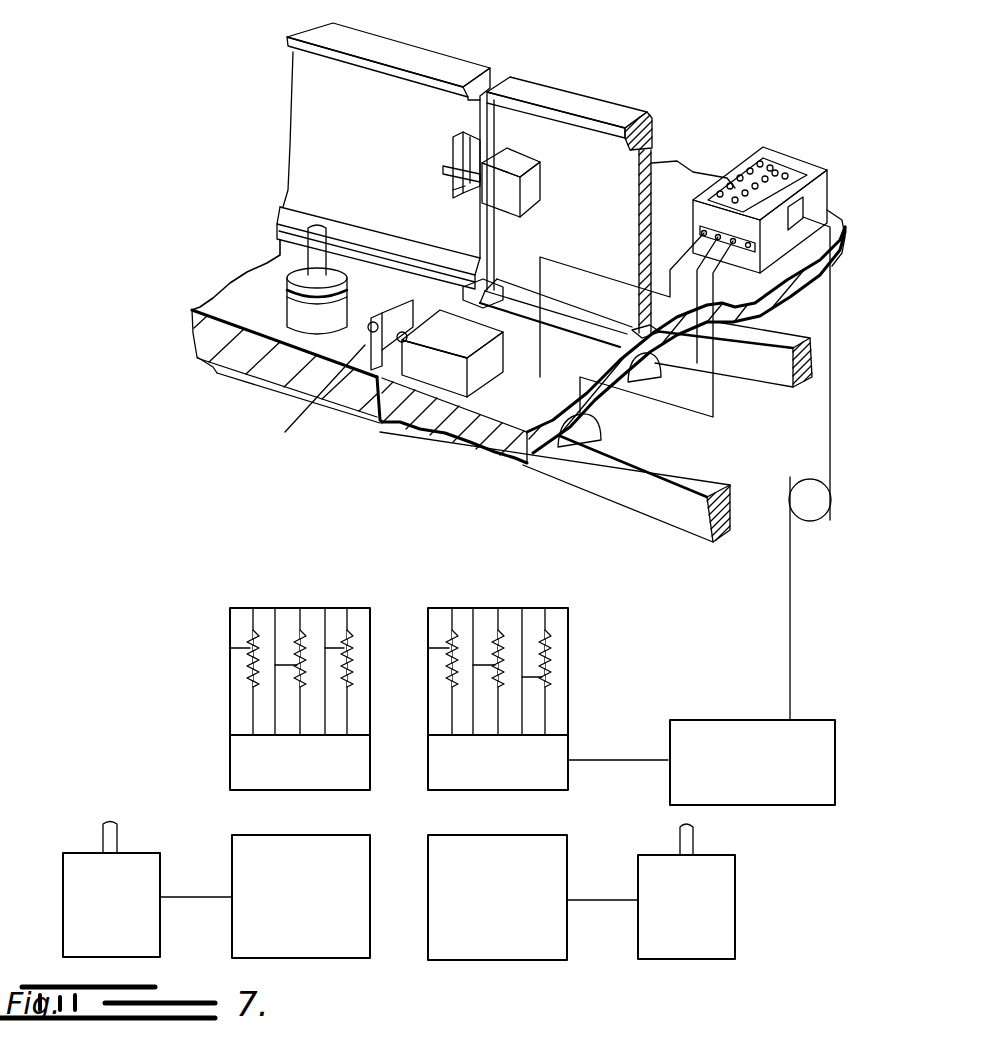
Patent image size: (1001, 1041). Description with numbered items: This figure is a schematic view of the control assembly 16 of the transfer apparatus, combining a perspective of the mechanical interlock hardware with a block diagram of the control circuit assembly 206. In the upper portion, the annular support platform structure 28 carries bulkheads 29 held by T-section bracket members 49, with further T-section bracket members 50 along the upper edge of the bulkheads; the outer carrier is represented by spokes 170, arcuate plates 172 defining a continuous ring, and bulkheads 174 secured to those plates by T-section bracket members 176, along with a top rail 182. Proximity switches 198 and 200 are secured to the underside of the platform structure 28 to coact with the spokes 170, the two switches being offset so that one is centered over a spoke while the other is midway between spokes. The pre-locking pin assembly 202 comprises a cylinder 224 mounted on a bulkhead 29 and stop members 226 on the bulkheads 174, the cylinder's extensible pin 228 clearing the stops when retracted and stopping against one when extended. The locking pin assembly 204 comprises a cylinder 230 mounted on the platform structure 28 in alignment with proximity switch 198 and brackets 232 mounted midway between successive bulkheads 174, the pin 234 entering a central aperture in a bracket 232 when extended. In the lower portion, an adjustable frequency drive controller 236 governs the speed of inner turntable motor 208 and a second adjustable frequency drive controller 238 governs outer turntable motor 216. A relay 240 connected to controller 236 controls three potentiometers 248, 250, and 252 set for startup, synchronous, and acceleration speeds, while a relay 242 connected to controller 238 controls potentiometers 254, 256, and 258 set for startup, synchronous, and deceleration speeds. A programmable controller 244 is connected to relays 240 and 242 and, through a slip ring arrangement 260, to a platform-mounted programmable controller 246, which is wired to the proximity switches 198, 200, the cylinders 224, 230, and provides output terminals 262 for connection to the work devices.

The control assembly 16 is at (158, 374).
The support platform structure 28 is at (528, 408).
The bulkhead 29 is at (617, 200).
The T-section bracket member 49 is at (517, 277).
The T-section bracket member 50 is at (576, 104).
The spoke 170 is at (618, 493).
The arcuate plate 172 is at (237, 293).
The bulkhead 174 is at (346, 116).
The T-section bracket member 176 is at (338, 216).
The top rail 182 is at (440, 62).
The proximity switch 198 is at (600, 436).
The proximity switch 200 is at (657, 380).
The pre-locking pin assembly 202 is at (436, 150).
The locking pin assembly 204 is at (428, 296).
The control circuit assembly 206 is at (152, 700).
The inner turntable motor 208 is at (728, 917).
The outer turntable motor 216 is at (63, 867).
The cylinder 224 is at (515, 158).
The stop member 226 is at (452, 192).
The pin 228 is at (440, 172).
The cylinder 230 is at (466, 343).
The bracket 232 is at (388, 318).
The pin 234 is at (315, 397).
The adjustable frequency drive controller 236 is at (540, 960).
The adjustable frequency drive controller 238 is at (362, 958).
The relay 240 is at (568, 787).
The relay 242 is at (230, 750).
The programmable controller 244 is at (715, 727).
The programmable controller 246 is at (808, 170).
The potentiometer 248 is at (443, 607).
The potentiometer 250 is at (485, 605).
The potentiometer 252 is at (537, 607).
The potentiometer 254 is at (240, 607).
The potentiometer 256 is at (287, 605).
The potentiometer 258 is at (337, 605).
The slip ring arrangement 260 is at (818, 502).
The output terminal 262 is at (741, 153).